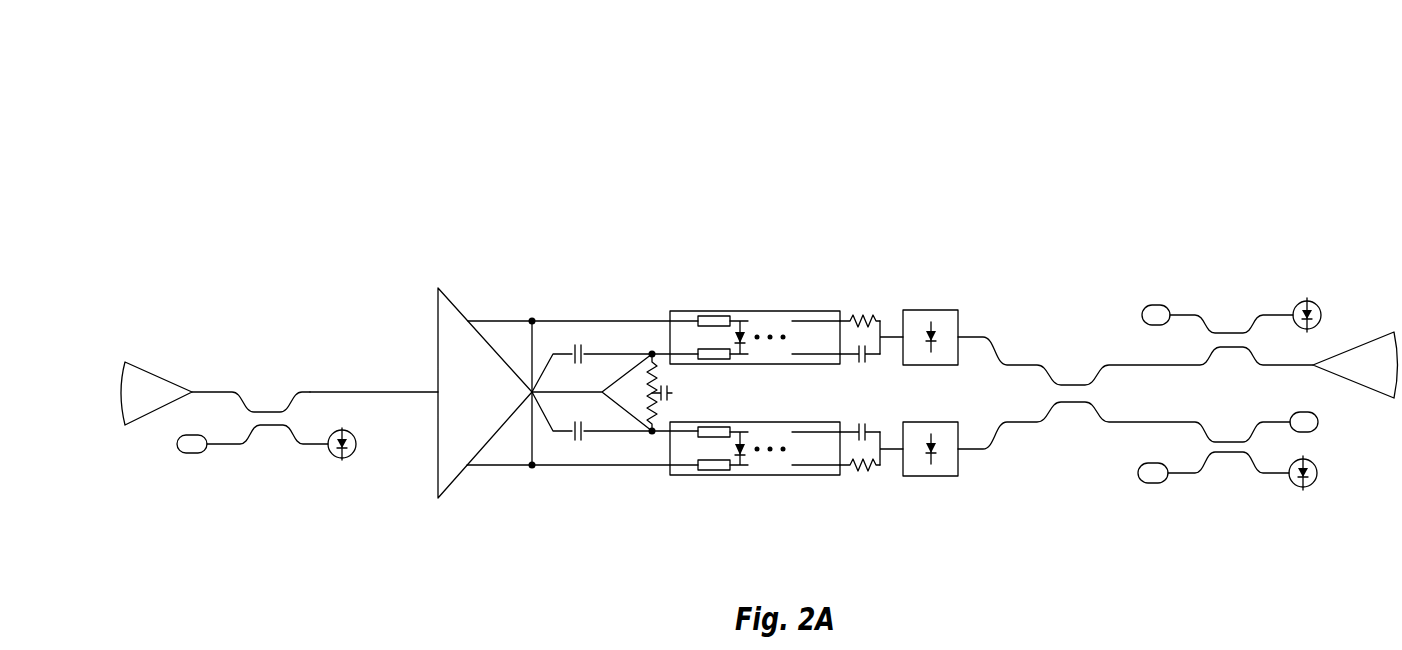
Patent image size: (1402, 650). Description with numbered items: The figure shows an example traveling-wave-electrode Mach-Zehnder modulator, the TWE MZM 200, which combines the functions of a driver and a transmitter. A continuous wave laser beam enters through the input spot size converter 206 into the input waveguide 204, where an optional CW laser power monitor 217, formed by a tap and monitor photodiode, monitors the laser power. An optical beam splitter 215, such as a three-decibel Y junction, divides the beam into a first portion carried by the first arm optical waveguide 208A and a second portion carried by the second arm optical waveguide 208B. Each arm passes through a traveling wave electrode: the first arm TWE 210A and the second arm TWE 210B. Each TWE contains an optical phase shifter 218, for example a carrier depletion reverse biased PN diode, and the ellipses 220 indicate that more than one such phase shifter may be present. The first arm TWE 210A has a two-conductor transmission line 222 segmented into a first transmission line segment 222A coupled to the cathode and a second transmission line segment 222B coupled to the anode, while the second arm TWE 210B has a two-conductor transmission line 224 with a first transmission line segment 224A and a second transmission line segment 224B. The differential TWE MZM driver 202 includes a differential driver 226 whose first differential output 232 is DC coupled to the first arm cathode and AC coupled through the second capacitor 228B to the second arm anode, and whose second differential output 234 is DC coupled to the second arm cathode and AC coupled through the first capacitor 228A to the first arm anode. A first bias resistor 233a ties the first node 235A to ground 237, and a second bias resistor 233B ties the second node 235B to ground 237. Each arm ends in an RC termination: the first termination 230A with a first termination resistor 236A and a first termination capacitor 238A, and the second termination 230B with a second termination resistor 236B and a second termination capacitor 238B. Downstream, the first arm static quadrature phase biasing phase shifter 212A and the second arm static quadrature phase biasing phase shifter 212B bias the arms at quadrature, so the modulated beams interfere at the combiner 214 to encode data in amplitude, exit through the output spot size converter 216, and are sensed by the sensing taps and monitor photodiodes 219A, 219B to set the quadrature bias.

The TWE MZM 200 is at (1313, 99).
The differential TWE MZM driver 202 is at (522, 224).
The input waveguide 204 is at (408, 392).
The input spot size converter 206 is at (160, 402).
The first arm optical waveguide 208A is at (628, 350).
The second arm optical waveguide 208B is at (628, 436).
The first arm TWE 210A is at (793, 311).
The second arm TWE 210B is at (793, 475).
The first arm static quadrature phase biasing phase shifter 212A is at (915, 310).
The second arm static quadrature phase biasing phase shifter 212B is at (915, 476).
The combiner 214 is at (1068, 368).
The optical beam splitter 215 is at (603, 392).
The output spot size converter 216 is at (1393, 377).
The CW laser power monitor 217 is at (263, 392).
The optical phase shifter 218 is at (741, 346).
The sensing tap and monitor photodiode 219A is at (1228, 311).
The sensing tap and monitor photodiode 219B is at (1228, 474).
The ellipses 220 is at (786, 341).
The two-conductor transmission line 222 is at (782, 225).
The first transmission line segment 222A is at (711, 316).
The second transmission line segment 222B is at (718, 349).
The two-conductor transmission line 224 is at (782, 500).
The first transmission line segment 224A is at (718, 470).
The second transmission line segment 224B is at (711, 440).
The differential driver 226 is at (489, 403).
The first capacitor 228A is at (581, 345).
The second capacitor 228B is at (581, 440).
The first termination 230A is at (888, 296).
The second termination 230B is at (888, 492).
The first differential output 232 is at (562, 400).
The first bias resistor 233a is at (681, 356).
The second bias resistor 233B is at (681, 430).
The second differential output 234 is at (562, 400).
The first node 235A is at (648, 346).
The second node 235B is at (648, 439).
The first termination resistor 236A is at (866, 314).
The second termination resistor 236B is at (866, 471).
The ground 237 is at (672, 393).
The first termination capacitor 238A is at (866, 362).
The second termination capacitor 238B is at (866, 424).